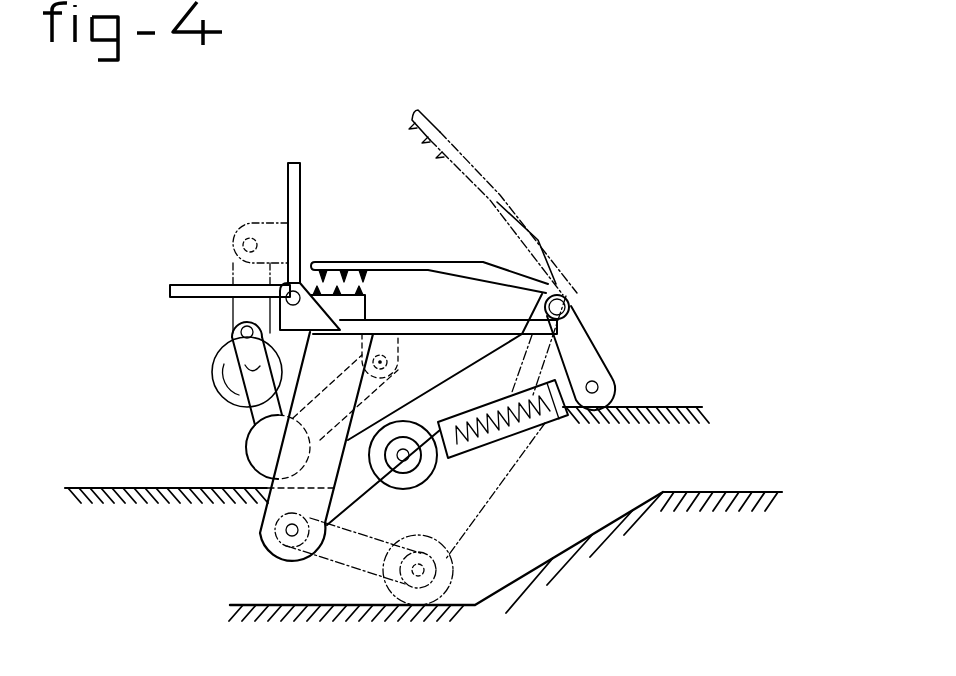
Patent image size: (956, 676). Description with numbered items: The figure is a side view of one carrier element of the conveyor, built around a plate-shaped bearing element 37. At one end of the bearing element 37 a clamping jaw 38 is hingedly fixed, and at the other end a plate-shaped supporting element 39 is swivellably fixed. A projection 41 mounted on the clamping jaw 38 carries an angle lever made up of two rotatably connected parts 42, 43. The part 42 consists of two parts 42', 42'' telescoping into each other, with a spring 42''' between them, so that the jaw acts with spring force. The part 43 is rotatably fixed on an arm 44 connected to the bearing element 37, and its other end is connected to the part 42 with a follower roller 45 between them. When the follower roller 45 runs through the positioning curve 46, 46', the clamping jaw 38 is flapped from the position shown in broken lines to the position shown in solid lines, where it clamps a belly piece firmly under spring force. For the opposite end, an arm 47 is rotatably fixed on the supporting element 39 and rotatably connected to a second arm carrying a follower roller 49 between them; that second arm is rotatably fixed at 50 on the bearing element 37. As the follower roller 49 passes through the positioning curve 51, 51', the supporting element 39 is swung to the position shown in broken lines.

The plate-shaped bearing element 37 is at (481, 332).
The clamping jaw 38 is at (408, 262).
The plate-shaped supporting element 39 is at (297, 187).
The projection 41 is at (583, 363).
The part of angle lever 42 is at (523, 428).
The telescoping part 42' is at (524, 346).
The telescoping part 42'' is at (445, 367).
The spring 42''' is at (504, 491).
The part of angle lever 43 is at (357, 497).
The arm 44 is at (250, 420).
The follower roller 45 is at (417, 493).
The positioning curve 46 is at (435, 556).
The positioning curve 46' is at (731, 483).
The arm 47 is at (225, 372).
The follower roller 49 is at (218, 345).
The pivot of second arm 50 is at (390, 326).
The positioning curve 51 is at (166, 469).
The positioning curve 51' is at (652, 396).